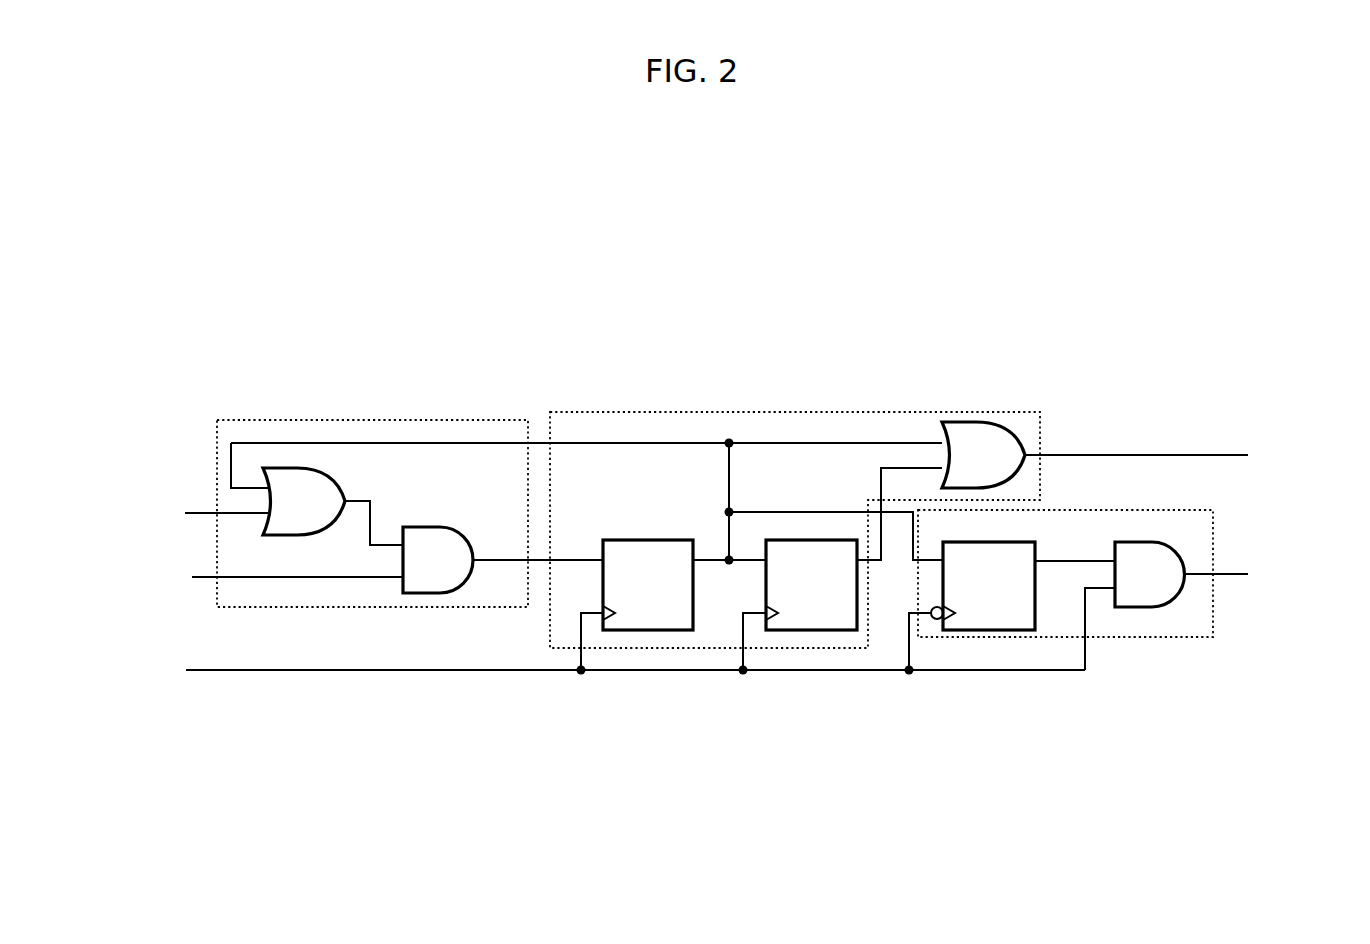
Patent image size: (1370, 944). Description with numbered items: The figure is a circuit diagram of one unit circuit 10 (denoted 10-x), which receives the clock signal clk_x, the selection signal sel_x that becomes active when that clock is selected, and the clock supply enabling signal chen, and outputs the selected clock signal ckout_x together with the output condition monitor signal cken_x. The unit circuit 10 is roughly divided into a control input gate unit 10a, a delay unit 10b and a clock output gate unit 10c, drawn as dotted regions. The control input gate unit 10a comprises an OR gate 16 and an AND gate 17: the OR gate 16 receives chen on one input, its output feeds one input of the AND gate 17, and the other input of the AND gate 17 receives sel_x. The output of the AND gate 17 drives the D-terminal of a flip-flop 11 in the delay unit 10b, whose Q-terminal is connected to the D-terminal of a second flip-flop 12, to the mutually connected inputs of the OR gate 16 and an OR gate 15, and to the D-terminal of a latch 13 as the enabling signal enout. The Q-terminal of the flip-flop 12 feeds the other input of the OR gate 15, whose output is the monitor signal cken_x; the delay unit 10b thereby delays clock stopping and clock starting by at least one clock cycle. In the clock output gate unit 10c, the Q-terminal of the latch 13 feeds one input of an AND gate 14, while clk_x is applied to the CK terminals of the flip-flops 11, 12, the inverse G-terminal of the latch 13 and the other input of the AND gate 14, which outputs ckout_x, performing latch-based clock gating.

The unit circuit 10 is at (158, 380).
The control input gate unit 10a is at (437, 420).
The delay unit 10b is at (775, 412).
The clock output gate unit 10c is at (1110, 638).
The flip-flop 11 is at (655, 540).
The flip-flop 12 is at (800, 630).
The latch 13 is at (1023, 542).
The AND gate 14 is at (1158, 607).
The OR gate 15 is at (988, 422).
The OR gate 16 is at (293, 535).
The AND gate 17 is at (437, 527).